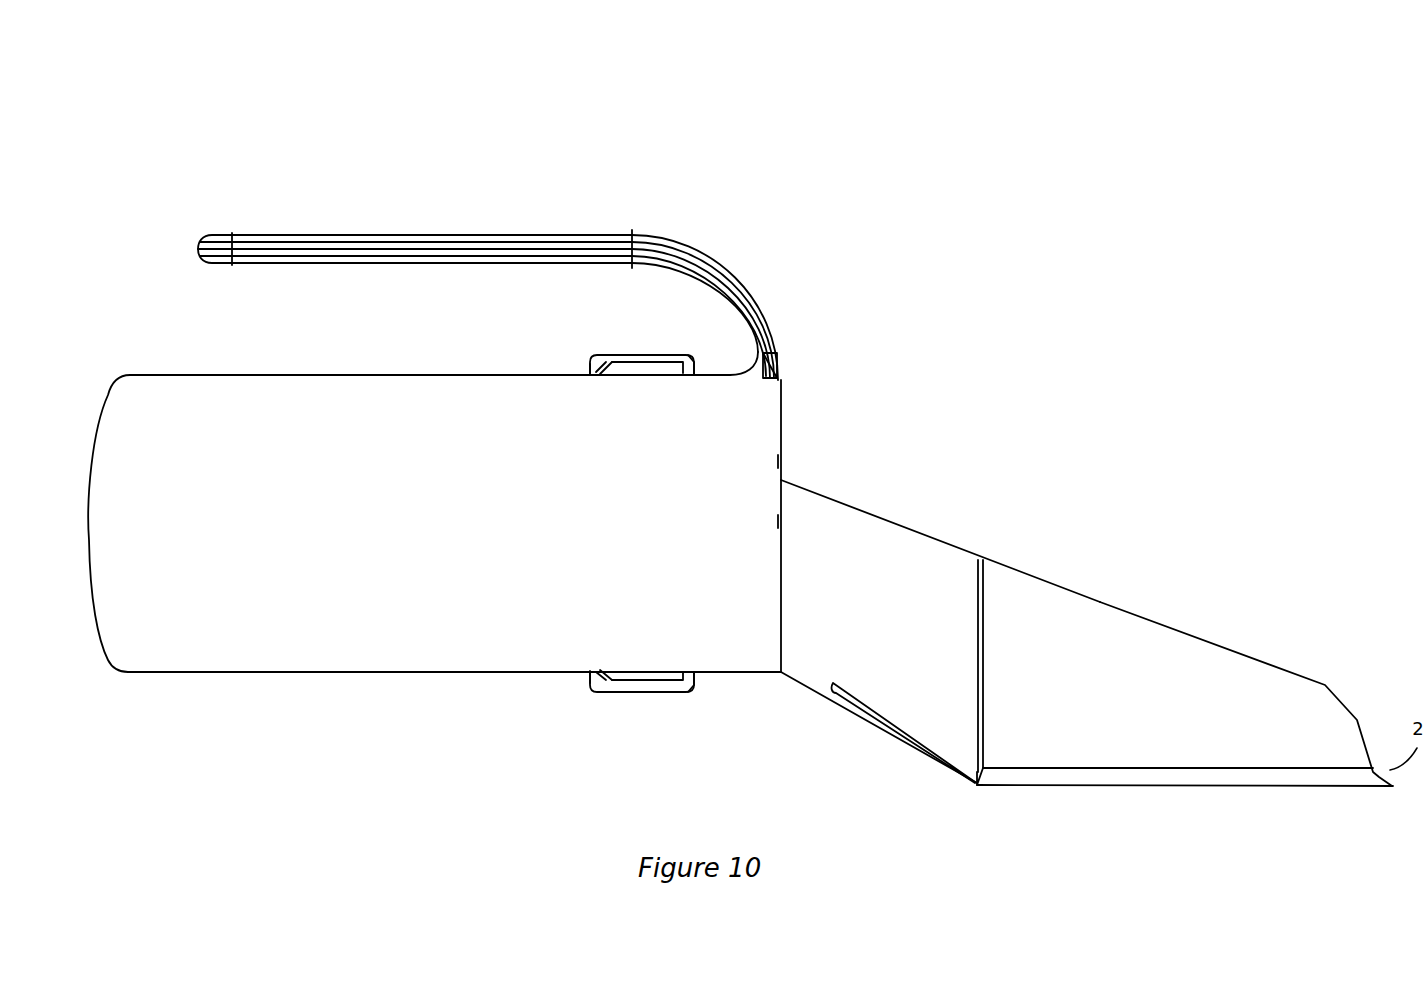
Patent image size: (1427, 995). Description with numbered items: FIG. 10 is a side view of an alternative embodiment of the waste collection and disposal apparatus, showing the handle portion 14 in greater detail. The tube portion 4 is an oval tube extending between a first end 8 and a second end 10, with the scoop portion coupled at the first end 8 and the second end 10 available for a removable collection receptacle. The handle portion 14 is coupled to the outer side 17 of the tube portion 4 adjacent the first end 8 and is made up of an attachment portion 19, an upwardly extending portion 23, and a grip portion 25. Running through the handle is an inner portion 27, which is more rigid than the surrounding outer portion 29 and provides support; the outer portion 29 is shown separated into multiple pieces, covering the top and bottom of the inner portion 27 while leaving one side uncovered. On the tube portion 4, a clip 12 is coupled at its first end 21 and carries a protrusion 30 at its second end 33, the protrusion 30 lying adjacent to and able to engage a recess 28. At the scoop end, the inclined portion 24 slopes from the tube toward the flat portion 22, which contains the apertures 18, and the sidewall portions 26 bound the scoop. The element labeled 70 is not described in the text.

The tube portion 4 is at (270, 732).
The first end 8 is at (783, 392).
The second end 10 is at (115, 390).
The clip 12 is at (648, 336).
The handle portion 14 is at (532, 112).
The outer side 17 is at (425, 650).
The apertures 18 is at (850, 695).
The attachment portion 19 is at (765, 362).
The first end 21 is at (688, 378).
The flat portion 22 is at (1278, 777).
The upwardly extending portion 23 is at (737, 265).
The inclined portion 24 is at (855, 535).
The grip portion 25 is at (415, 230).
The sidewall portions 26 is at (1080, 620).
The inner portion 27 is at (302, 247).
The recess 28 is at (596, 378).
The outer portion 29 is at (252, 253).
The protrusion 30 is at (595, 692).
The second end 33 is at (605, 352).
The clip tab 70 is at (590, 360).